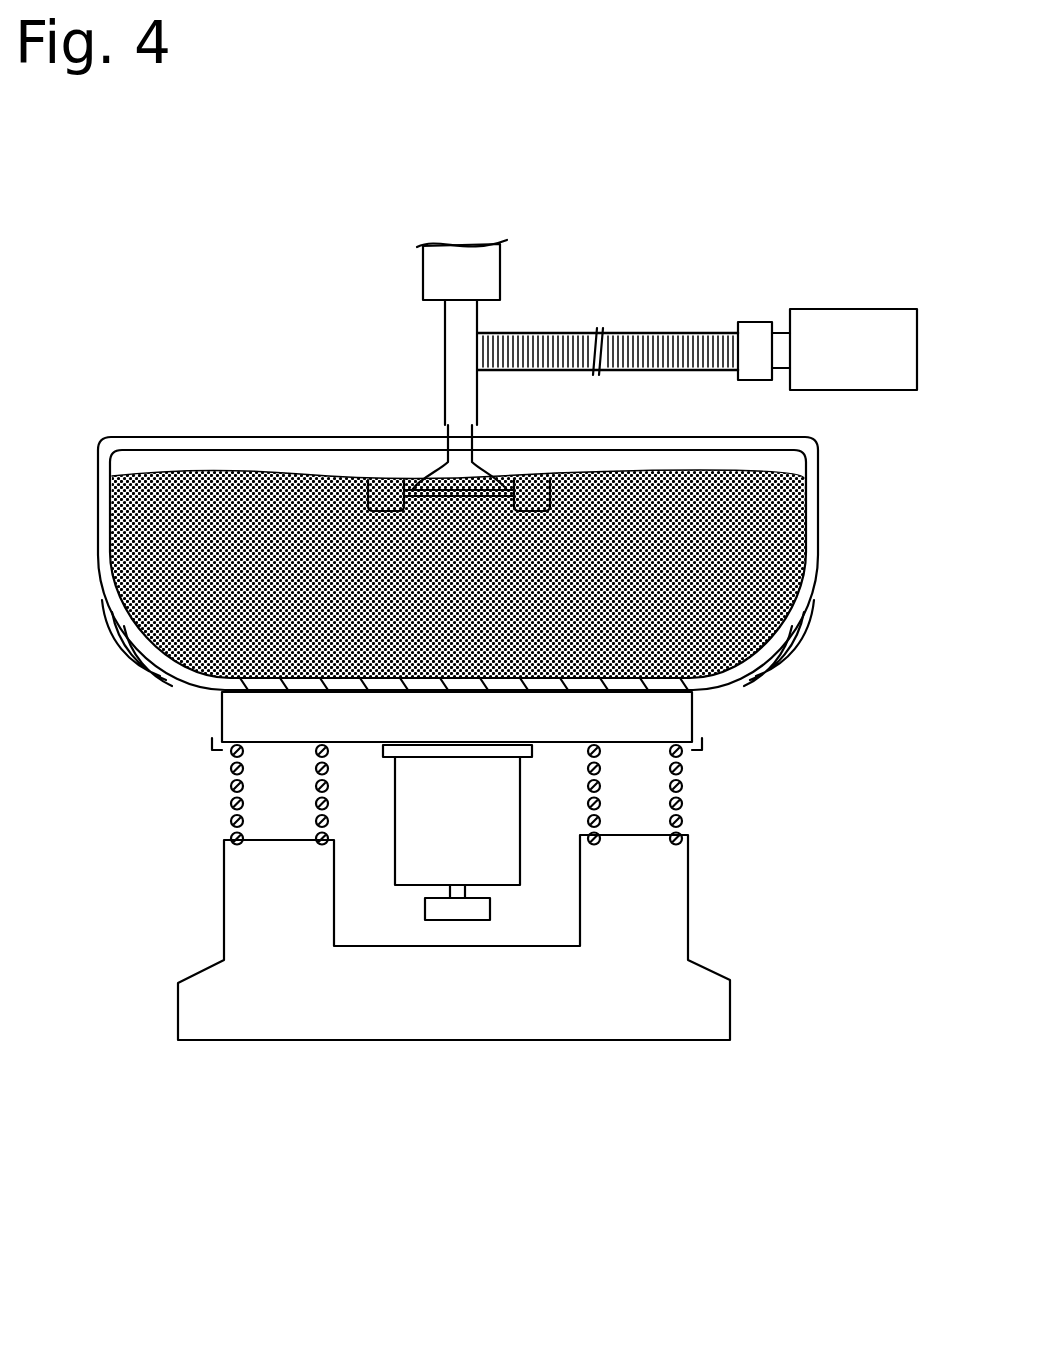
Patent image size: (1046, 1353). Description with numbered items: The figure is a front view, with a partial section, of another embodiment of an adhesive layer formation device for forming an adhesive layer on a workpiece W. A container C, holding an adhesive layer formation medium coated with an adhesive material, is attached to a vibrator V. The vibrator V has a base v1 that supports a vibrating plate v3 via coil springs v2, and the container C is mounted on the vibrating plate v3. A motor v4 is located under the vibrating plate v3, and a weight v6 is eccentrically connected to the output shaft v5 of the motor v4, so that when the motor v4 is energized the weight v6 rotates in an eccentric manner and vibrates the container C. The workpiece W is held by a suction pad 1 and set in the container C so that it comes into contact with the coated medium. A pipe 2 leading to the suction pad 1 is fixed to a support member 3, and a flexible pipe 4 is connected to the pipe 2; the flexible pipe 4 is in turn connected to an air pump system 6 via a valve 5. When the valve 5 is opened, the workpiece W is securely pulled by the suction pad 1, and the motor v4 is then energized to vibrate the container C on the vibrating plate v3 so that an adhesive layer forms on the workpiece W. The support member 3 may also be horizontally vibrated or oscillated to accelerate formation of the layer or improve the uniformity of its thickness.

The suction pad 1 is at (434, 472).
The pipe 2 is at (445, 345).
The support member 3 is at (450, 265).
The flexible pipe 4 is at (543, 333).
The valve 5 is at (752, 332).
The air pump system 6 is at (847, 325).
The container C is at (122, 440).
The workpiece W is at (536, 480).
The vibrator V is at (494, 924).
The base v1 is at (272, 1000).
The coil springs v2 is at (230, 788).
The vibrating plate v3 is at (680, 704).
The motor v4 is at (413, 840).
The output shaft v5 is at (463, 891).
The weight v6 is at (465, 912).